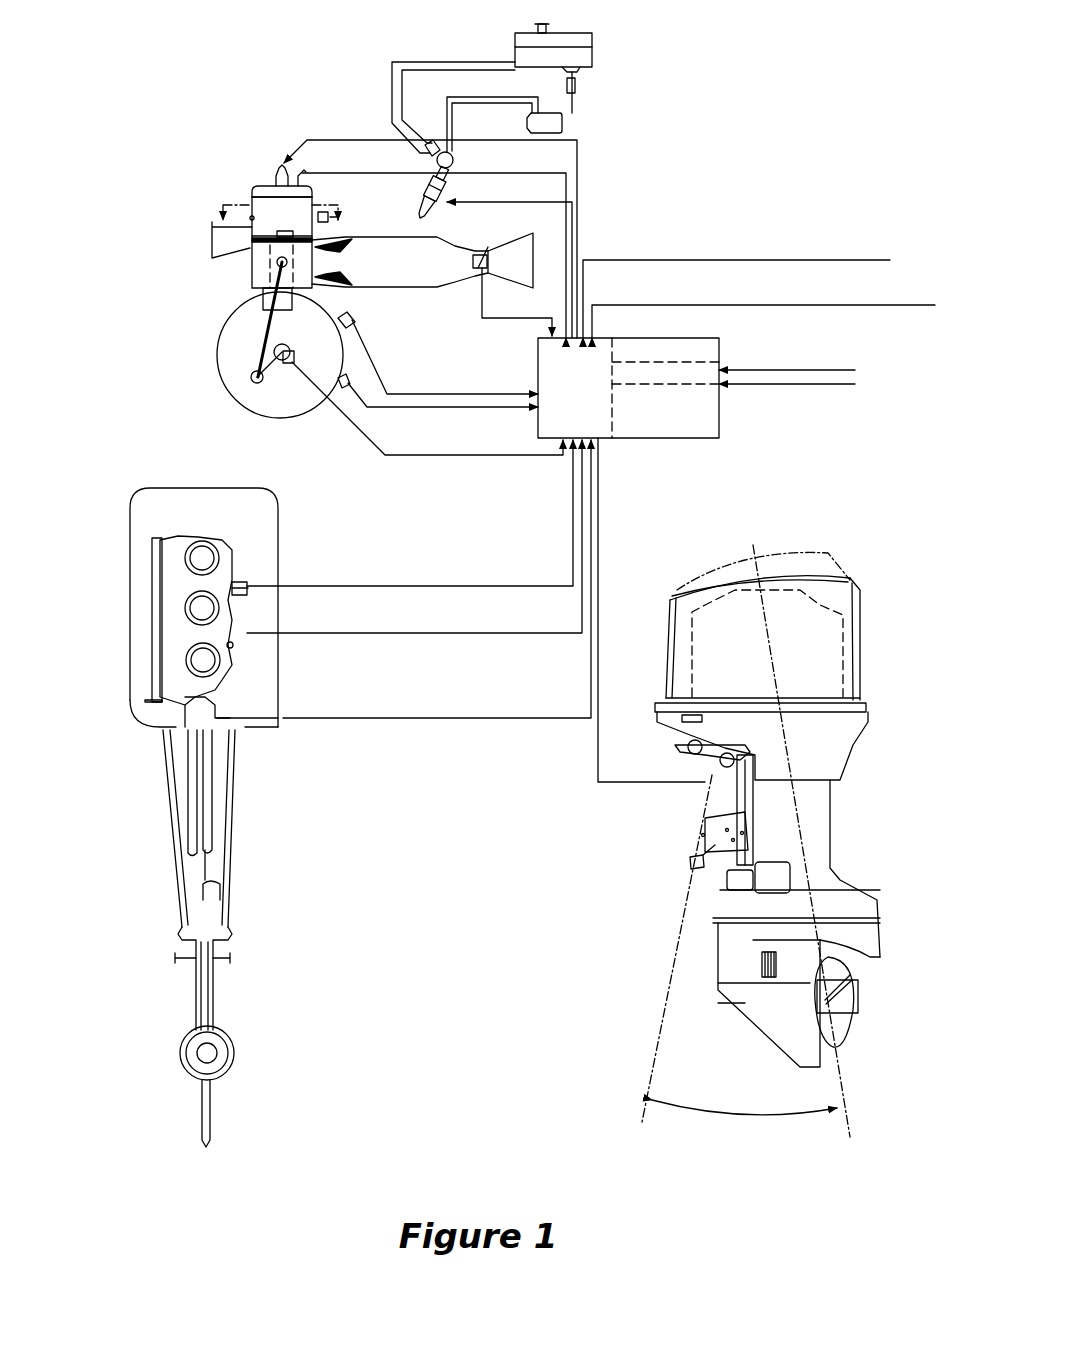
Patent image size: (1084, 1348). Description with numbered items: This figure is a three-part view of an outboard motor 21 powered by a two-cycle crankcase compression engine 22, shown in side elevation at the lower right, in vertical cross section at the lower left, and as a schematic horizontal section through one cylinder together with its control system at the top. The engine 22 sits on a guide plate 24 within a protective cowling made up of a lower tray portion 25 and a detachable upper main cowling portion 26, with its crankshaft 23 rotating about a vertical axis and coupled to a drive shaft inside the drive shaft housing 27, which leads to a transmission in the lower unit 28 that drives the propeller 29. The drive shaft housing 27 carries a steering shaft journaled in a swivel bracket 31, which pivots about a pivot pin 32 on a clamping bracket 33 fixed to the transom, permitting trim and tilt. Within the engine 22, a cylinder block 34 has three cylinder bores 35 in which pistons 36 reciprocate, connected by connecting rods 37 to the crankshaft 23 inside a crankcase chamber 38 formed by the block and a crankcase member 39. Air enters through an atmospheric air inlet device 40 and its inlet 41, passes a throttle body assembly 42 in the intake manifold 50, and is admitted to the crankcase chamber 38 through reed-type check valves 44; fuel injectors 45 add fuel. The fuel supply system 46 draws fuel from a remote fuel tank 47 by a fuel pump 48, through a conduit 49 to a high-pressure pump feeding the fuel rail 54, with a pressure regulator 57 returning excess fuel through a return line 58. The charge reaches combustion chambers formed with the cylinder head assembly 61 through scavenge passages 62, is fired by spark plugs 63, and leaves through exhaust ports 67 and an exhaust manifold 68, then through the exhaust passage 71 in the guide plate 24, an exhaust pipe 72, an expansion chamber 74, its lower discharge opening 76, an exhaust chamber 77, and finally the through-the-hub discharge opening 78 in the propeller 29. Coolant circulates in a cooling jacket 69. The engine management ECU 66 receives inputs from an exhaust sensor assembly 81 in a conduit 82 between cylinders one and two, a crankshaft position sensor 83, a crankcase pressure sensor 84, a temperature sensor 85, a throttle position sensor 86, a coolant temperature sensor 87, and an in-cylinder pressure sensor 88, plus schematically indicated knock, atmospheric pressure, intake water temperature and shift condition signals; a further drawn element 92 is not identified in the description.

The outboard motor 21 is at (155, 460).
The internal combustion engine 22 is at (188, 140).
The crankshaft 23 is at (300, 355).
The guide plate 24 is at (166, 740).
The lower tray portion 25 is at (285, 720).
The upper main cowling portion 26 is at (272, 490).
The drive shaft housing 27 is at (237, 826).
The lower unit 28 is at (230, 1030).
The propeller 29 is at (850, 1040).
The swivel bracket 31 is at (750, 852).
The pivot pin 32 is at (688, 750).
The clamping bracket 33 is at (222, 204).
The cylinder block 34 is at (250, 248).
The cylinder bores 35 is at (192, 670).
The pistons 36 is at (258, 285).
The connecting rods 37 is at (258, 368).
The crankcase chamber 38 is at (290, 348).
The crankcase member 39 is at (245, 395).
The atmospheric air inlet device 40 is at (510, 240).
The air inlet 41 is at (492, 262).
The throttle body assembly 42 is at (487, 248).
The reed-type check valves 44 is at (348, 255).
The fuel injectors 45 is at (447, 200).
The fuel supply system 46 is at (603, 78).
The fuel tank 47 is at (570, 33).
The fuel pump 48 is at (570, 130).
The conduit 49 is at (508, 96).
The intake manifold 50 is at (438, 290).
The fuel rail 54 is at (455, 160).
The pressure regulator 57 is at (430, 145).
The return line 58 is at (410, 62).
The cylinder head assembly 61 is at (250, 190).
The scavenge passages 62 is at (265, 196).
The spark plugs 63 is at (272, 165).
The engine management ECU 66 is at (650, 440).
The exhaust ports 67 is at (210, 235).
The exhaust manifold 68 is at (154, 575).
The cooling jacket 69 is at (170, 560).
The exhaust passage 71 is at (220, 705).
The exhaust pipe 72 is at (212, 780).
The expansion chamber 74 is at (208, 873).
The lower discharge opening 76 is at (222, 895).
The exhaust chamber 77 is at (214, 1010).
The through-the-hub exhaust gas discharge opening 78 is at (212, 1062).
The exhaust sensor assembly 81 is at (324, 210).
The conduit 82 is at (250, 600).
The crankshaft position sensor 83 is at (287, 365).
The crankcase pressure sensor 84 is at (356, 318).
The temperature sensor 85 is at (335, 420).
The throttle position sensor 86 is at (472, 262).
The coolant temperature sensor 87 is at (233, 648).
The in-cylinder pressure sensor 88 is at (301, 170).
The shift rod 92 is at (243, 730).